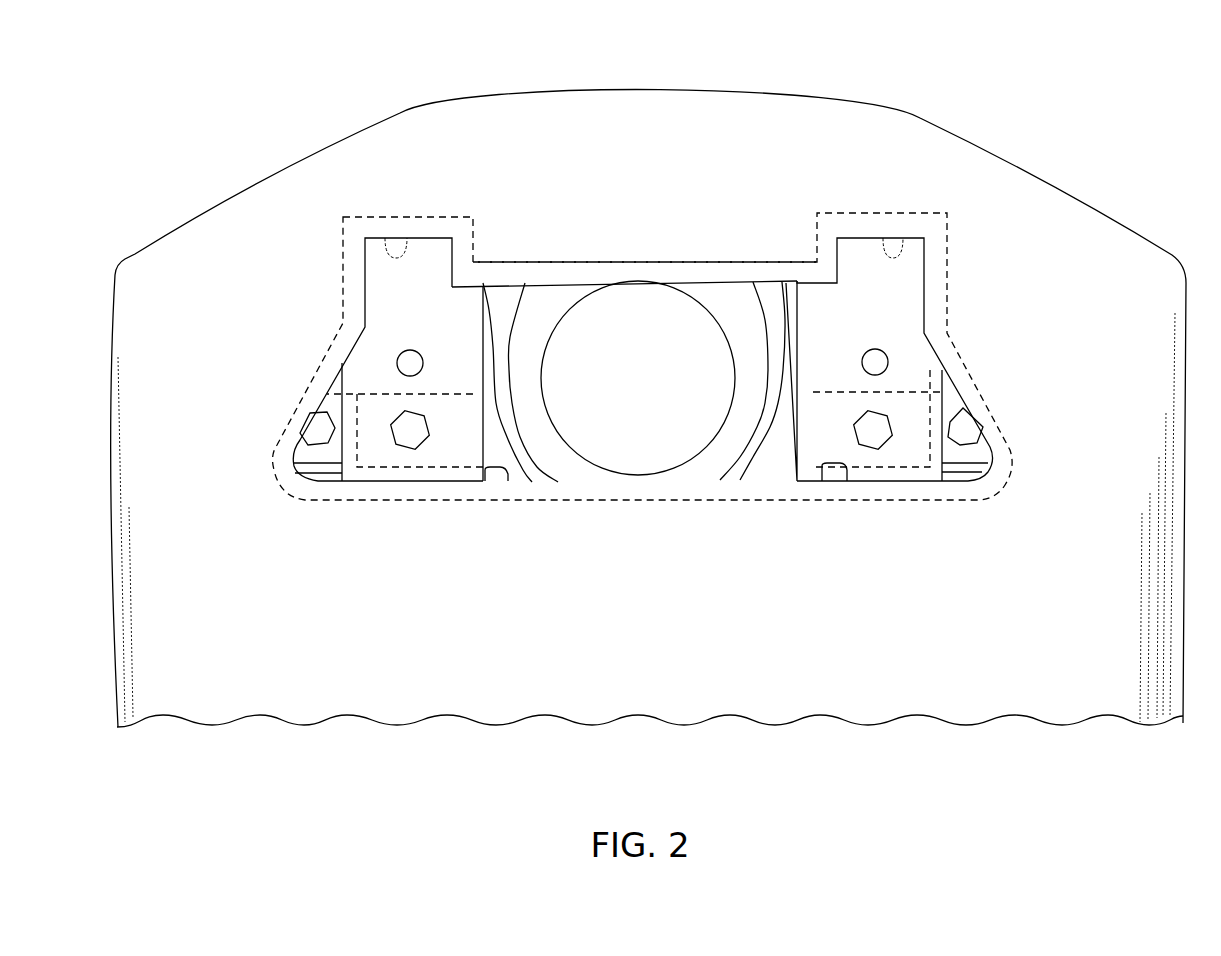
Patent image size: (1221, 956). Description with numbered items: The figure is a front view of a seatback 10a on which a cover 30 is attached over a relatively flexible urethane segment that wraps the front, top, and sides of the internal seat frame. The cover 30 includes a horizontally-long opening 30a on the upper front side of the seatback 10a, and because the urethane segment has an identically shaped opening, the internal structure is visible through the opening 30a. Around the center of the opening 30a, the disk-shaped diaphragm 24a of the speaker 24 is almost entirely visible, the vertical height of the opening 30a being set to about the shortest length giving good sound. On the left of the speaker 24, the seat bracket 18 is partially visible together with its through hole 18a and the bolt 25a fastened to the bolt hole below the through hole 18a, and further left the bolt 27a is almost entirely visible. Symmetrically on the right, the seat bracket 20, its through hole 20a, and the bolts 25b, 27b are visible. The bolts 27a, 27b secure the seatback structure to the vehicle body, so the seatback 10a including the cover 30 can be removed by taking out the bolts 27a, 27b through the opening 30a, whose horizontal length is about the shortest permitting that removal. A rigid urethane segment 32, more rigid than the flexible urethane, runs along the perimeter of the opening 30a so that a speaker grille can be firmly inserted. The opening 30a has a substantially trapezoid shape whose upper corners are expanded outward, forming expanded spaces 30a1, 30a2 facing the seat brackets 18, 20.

The seatback 10a is at (1052, 108).
The seat bracket 18 is at (428, 258).
The through hole 18a is at (395, 356).
The seat bracket 20 is at (852, 250).
The through hole 20a is at (880, 348).
The speaker 24 is at (562, 285).
The diaphragm 24a is at (628, 298).
The bolt 25a is at (405, 452).
The bolt 25b is at (878, 450).
The bolt 27a is at (317, 444).
The bolt 27b is at (965, 445).
The cover 30 is at (866, 106).
The opening 30a is at (732, 313).
The expanded space 30a1 is at (400, 238).
The expanded space 30a2 is at (903, 240).
The rigid urethane segment 32 is at (688, 262).